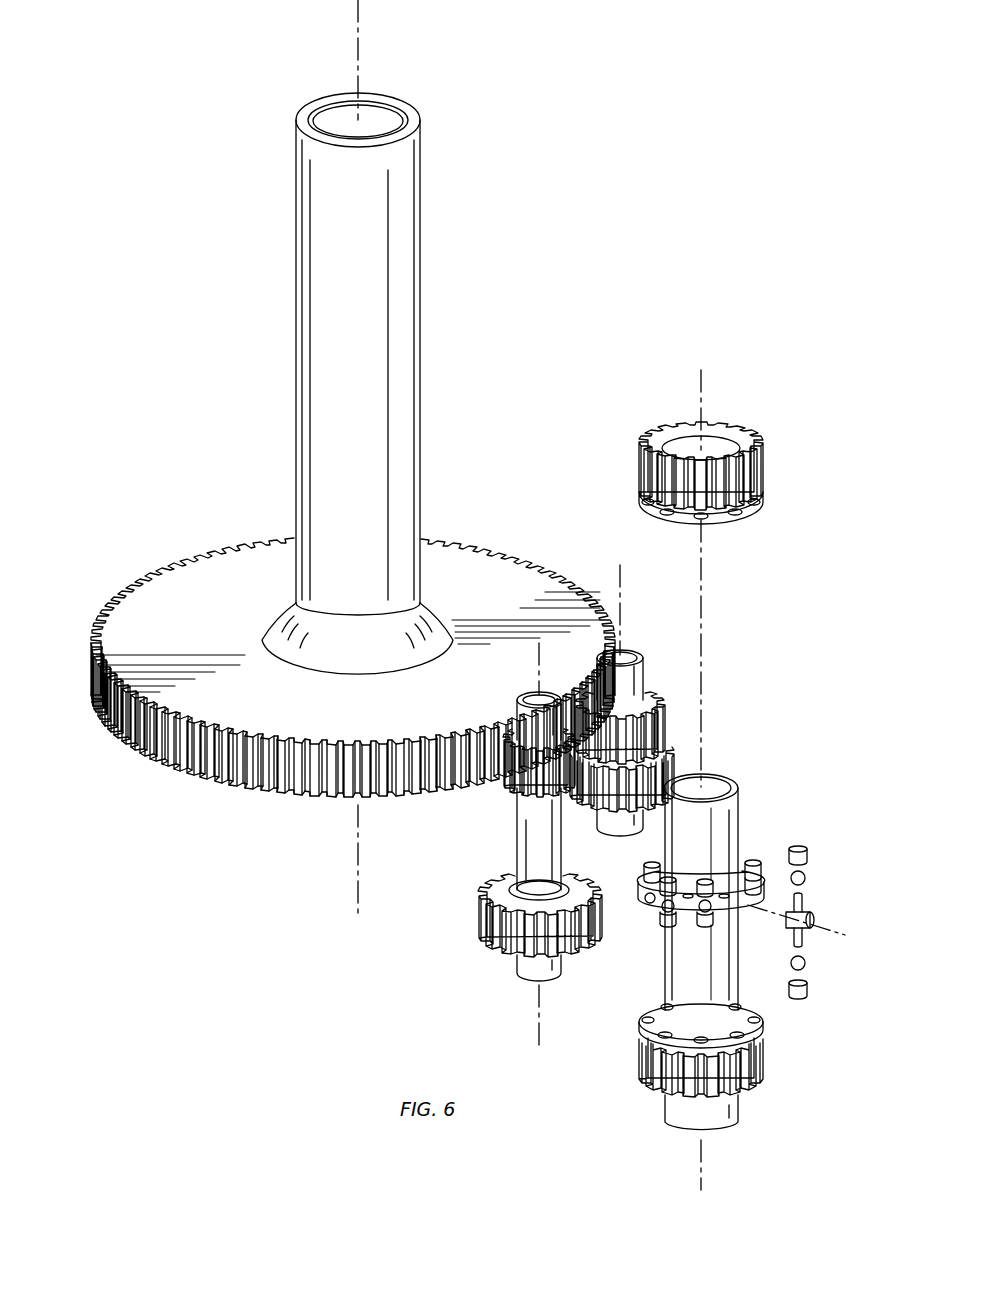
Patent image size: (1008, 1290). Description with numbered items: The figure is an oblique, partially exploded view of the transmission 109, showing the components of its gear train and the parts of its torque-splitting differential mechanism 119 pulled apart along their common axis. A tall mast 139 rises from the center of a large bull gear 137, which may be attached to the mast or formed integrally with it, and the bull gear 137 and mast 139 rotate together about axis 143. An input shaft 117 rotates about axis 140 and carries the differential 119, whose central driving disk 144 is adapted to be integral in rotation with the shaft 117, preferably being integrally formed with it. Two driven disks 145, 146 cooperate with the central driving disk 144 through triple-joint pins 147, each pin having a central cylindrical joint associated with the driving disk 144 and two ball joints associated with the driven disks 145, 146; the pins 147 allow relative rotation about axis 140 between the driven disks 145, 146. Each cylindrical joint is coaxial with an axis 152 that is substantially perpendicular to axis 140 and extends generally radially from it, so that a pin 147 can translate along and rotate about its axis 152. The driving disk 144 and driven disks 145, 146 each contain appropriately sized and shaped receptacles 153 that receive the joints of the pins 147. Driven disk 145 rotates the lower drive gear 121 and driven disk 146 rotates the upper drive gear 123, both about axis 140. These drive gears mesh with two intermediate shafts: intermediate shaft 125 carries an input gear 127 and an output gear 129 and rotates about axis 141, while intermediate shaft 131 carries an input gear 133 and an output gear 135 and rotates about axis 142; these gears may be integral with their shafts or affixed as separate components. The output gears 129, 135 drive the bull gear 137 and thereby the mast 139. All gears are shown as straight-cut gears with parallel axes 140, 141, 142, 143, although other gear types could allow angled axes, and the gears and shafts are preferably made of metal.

The transmission 109 is at (604, 146).
The input shaft 117 is at (665, 957).
The torque-splitting differential mechanism 119 is at (638, 882).
The lower drive gear 121 is at (644, 1062).
The upper drive gear 123 is at (764, 466).
The intermediate shaft 125 is at (518, 829).
The input gear 127 is at (482, 909).
The output gear 129 is at (526, 802).
The intermediate shaft 131 is at (632, 650).
The input gear 133 is at (681, 745).
The output gear 135 is at (662, 692).
The bull gear 137 is at (212, 550).
The mast 139 is at (421, 351).
The axis 140 is at (702, 384).
The axis 141 is at (537, 1039).
The axis 142 is at (621, 573).
The axis 143 is at (358, 57).
The central driving disk 144 is at (691, 922).
The driven disk 145 is at (642, 1024).
The driven disk 146 is at (764, 511).
The triple-joint pins 147 is at (752, 866).
The axis 152 is at (812, 938).
The receptacles 153 is at (707, 528).